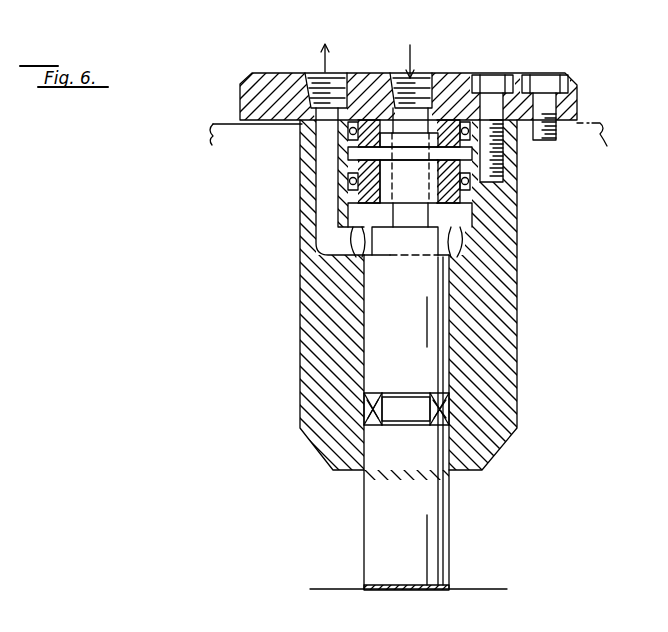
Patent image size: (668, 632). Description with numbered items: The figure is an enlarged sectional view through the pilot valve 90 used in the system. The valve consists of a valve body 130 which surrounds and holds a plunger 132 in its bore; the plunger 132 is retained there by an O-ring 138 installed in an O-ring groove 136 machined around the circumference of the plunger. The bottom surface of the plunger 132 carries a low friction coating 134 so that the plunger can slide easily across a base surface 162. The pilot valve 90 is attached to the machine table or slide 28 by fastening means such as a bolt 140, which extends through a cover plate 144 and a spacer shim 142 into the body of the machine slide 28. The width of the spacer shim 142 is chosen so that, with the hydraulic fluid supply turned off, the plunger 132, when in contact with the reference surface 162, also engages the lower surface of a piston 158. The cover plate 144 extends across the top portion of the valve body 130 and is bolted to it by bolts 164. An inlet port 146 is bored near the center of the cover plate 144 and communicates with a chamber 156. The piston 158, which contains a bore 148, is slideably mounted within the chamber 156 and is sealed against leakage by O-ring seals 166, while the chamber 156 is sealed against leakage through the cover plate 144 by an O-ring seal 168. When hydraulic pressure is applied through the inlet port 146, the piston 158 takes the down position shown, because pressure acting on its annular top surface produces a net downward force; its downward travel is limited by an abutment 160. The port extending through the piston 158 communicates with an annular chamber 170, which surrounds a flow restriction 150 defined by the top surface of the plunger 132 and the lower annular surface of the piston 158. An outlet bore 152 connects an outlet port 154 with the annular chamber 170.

The machine table or slide 28 is at (593, 197).
The pilot valve 90 is at (604, 160).
The valve body 130 is at (508, 312).
The plunger 132 is at (405, 511).
The low friction coating 134 is at (428, 591).
The O-ring groove 136 is at (372, 418).
The O-ring 138 is at (445, 393).
The bolt 140 is at (546, 86).
The spacer shim 142 is at (286, 120).
The cover plate 144 is at (252, 98).
The inlet port 146 is at (421, 80).
The bore 148 is at (398, 240).
The flow restriction 150 is at (438, 254).
The outlet bore 152 is at (322, 183).
The outlet port 154 is at (338, 80).
The chamber 156 is at (338, 160).
The piston 158 is at (458, 200).
The abutment 160 is at (470, 234).
The base surface 162 is at (322, 588).
The bolts 164 is at (493, 78).
The O-ring seals 166 is at (470, 178).
The O-ring seal 168 is at (470, 134).
The annular chamber 170 is at (334, 250).